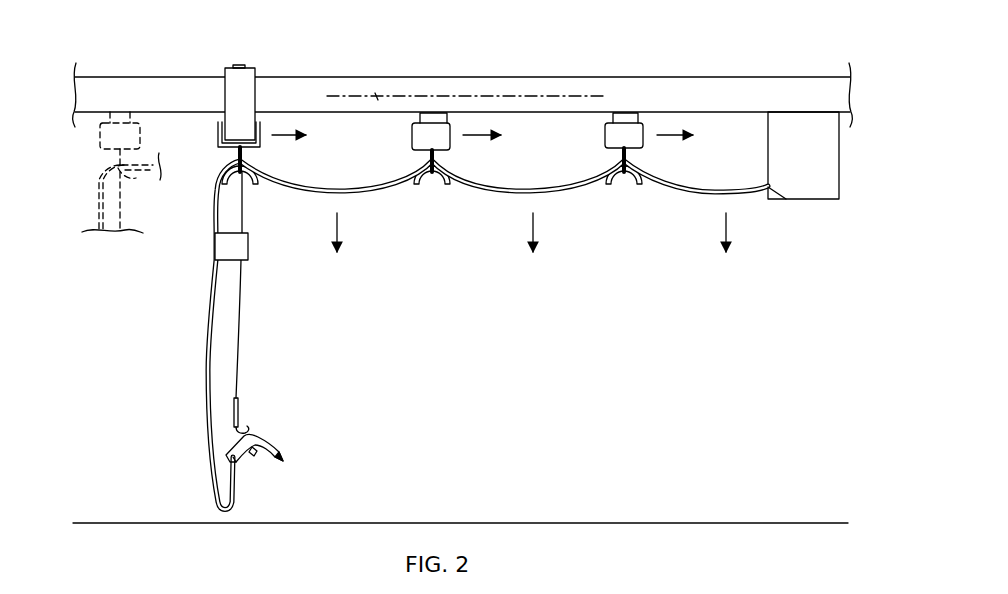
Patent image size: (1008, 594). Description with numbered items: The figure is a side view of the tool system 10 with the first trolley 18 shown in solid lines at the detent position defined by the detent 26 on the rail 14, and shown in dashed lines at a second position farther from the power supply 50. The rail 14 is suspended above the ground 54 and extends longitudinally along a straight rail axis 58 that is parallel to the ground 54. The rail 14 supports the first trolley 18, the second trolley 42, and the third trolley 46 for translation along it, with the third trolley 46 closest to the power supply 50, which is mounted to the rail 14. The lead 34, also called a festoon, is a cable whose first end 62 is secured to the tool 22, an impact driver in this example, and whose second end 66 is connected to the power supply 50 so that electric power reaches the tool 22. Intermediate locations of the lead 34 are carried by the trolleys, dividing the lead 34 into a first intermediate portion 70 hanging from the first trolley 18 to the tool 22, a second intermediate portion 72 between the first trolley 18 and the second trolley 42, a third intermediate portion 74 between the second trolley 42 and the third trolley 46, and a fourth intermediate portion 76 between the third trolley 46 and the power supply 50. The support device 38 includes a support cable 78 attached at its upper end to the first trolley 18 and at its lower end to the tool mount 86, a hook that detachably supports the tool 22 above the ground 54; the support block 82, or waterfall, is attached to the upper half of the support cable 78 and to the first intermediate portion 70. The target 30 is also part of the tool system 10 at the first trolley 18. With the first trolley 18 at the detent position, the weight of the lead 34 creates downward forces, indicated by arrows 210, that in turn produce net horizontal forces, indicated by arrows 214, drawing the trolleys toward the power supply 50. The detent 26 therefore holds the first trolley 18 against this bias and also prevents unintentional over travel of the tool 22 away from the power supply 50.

The tool system 10 is at (349, 64).
The rail 14 is at (545, 77).
The first trolley 18 is at (221, 93).
The tool 22 is at (270, 440).
The detent 26 is at (252, 72).
The target 30 is at (260, 135).
The lead 34 is at (454, 335).
The support device 38 is at (250, 343).
The second trolley 42 is at (447, 128).
The third trolley 46 is at (640, 127).
The power supply 50 is at (797, 117).
The ground 54 is at (536, 523).
The rail axis 58 is at (377, 96).
The first end 62 is at (235, 462).
The second end 66 is at (783, 193).
The first intermediate portion 70 is at (208, 425).
The second intermediate portion 72 is at (312, 193).
The third intermediate portion 74 is at (510, 193).
The fourth intermediate portion 76 is at (700, 192).
The support cable 78 is at (237, 367).
The support block 82 is at (215, 248).
The tool mount 86 is at (237, 402).
The arrows 210 is at (340, 228).
The arrows 214 is at (287, 137).